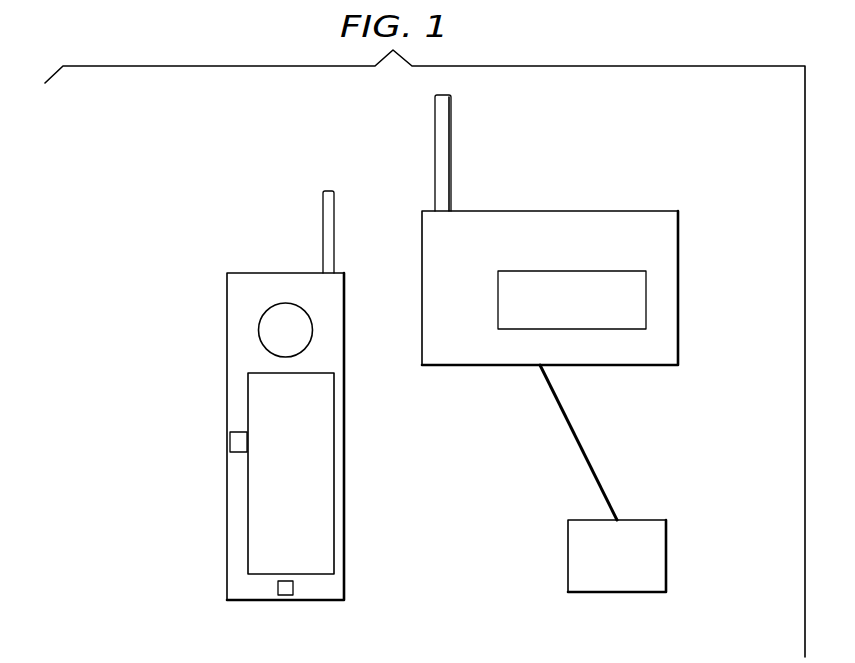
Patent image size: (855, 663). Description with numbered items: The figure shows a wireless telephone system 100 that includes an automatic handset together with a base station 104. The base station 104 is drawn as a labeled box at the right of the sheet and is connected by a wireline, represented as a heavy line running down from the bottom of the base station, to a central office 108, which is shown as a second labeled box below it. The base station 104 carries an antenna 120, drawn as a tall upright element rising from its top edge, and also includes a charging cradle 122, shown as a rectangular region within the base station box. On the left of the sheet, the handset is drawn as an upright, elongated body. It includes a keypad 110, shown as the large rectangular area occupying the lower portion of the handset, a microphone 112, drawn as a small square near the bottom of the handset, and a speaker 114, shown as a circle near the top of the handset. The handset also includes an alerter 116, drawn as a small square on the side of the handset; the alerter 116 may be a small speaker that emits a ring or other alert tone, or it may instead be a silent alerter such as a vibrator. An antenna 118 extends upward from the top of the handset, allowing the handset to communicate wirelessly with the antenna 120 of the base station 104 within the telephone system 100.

The wireless telephone system 100 is at (288, 154).
The base station 104 is at (625, 211).
The central office 108 is at (641, 520).
The keypad 110 is at (345, 422).
The microphone 112 is at (286, 596).
The speaker 114 is at (258, 331).
The alerter 116 is at (230, 438).
The antenna 118 is at (334, 221).
The antenna 120 is at (435, 143).
The charging cradle 122 is at (611, 271).